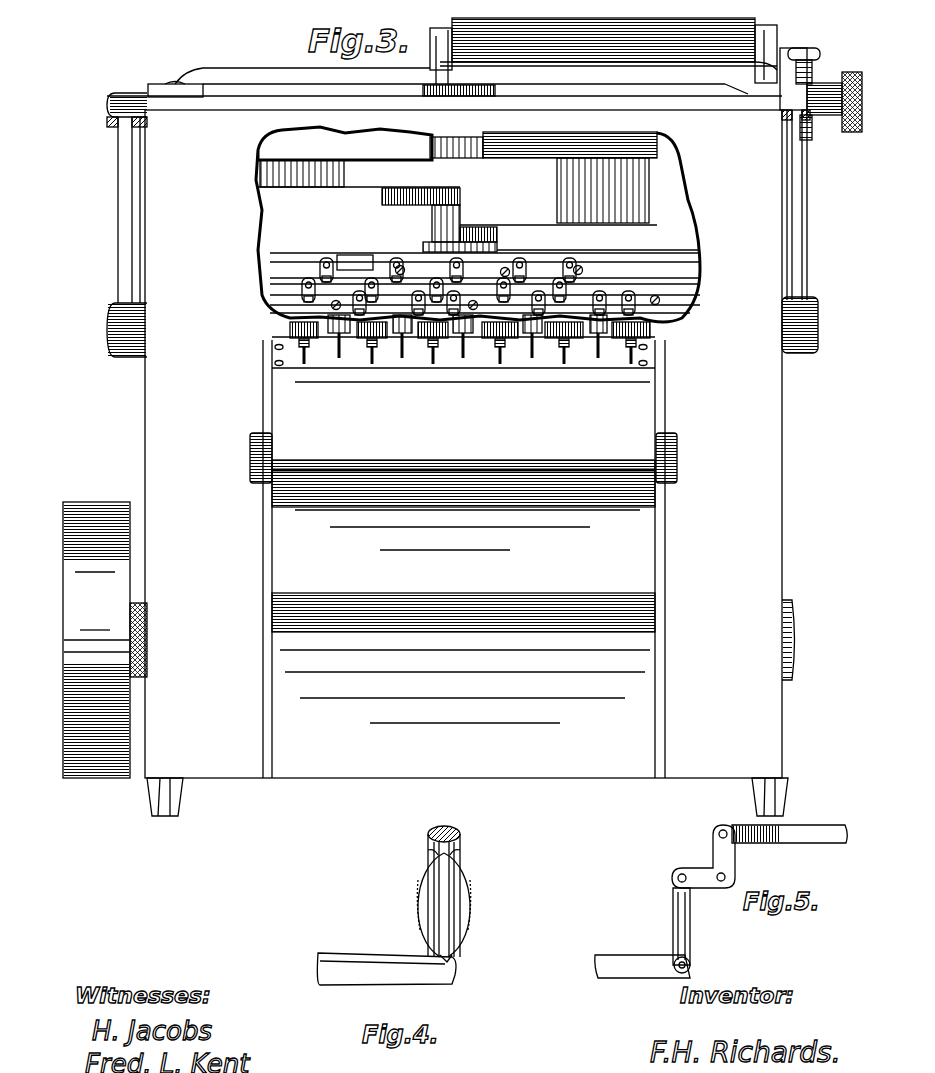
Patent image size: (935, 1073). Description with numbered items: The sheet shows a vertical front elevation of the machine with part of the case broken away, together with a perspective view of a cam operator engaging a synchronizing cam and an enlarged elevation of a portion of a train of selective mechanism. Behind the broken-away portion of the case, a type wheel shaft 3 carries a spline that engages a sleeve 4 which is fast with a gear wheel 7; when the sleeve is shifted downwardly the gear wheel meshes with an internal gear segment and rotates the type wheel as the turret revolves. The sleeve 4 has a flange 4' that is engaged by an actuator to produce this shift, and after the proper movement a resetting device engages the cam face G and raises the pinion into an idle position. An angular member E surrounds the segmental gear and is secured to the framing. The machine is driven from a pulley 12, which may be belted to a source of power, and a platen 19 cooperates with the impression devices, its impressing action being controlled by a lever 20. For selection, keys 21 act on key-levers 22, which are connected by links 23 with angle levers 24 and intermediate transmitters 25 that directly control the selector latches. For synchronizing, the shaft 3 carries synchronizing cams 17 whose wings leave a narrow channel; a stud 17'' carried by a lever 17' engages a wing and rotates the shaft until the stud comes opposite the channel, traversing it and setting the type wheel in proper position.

In FIG. 4, the type wheel shaft 3 is at (462, 843).
In FIG. 3, the sleeve 4 is at (446, 223).
In FIG. 3, the flange of the sleeve 4' is at (442, 240).
In FIG. 3, the gear wheel 7 is at (382, 197).
In FIG. 3, the pulley 12 is at (97, 504).
In FIG. 4, the synchronizing cam 17 is at (461, 903).
In FIG. 4, the lever 17' is at (386, 959).
In FIG. 4, the stud 17'' is at (468, 964).
In FIG. 3, the platen 19 is at (660, 144).
In FIG. 3, the lever 20 is at (120, 193).
In FIG. 3, the keys 21 is at (285, 331).
In FIG. 5, the key-lever 22 is at (636, 978).
In FIG. 3, the link 23 is at (318, 305).
In FIG. 5, the link 23 is at (690, 946).
In FIG. 3, the angle lever 24 is at (320, 268).
In FIG. 5, the angle lever 24 is at (735, 870).
In FIG. 3, the intermediate transmitter 25 is at (341, 264).
In FIG. 5, the intermediate transmitter 25 is at (806, 828).
In FIG. 3, the angular member E is at (320, 168).
In FIG. 3, the cam face G is at (528, 223).